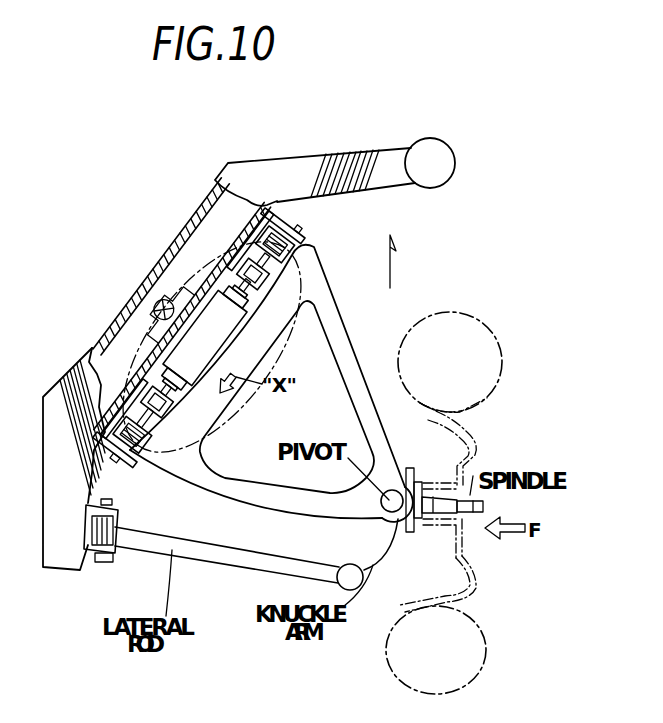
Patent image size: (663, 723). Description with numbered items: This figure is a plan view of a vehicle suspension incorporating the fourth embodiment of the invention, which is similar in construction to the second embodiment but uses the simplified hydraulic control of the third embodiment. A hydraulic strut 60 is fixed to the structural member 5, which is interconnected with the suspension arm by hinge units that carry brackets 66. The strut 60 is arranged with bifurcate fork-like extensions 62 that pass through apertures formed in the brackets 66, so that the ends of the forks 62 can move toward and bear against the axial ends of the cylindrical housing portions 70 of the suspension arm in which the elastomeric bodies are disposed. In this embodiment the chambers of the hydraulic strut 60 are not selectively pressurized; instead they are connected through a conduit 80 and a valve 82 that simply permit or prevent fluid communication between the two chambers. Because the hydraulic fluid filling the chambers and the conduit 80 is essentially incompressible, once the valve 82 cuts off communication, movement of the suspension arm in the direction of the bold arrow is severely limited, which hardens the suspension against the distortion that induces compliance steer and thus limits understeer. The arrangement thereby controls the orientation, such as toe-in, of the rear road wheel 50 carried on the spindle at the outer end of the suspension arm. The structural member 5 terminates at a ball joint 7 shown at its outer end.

The structural member 5 is at (326, 160).
The ball joint 7 is at (431, 140).
The rear road wheel 50 is at (483, 330).
The strut 60 is at (183, 275).
The bifurcate fork-like extension 62 is at (282, 292).
The bracket 66 is at (273, 226).
The cylindrical housing portion 70 is at (296, 254).
The conduit 80 is at (176, 300).
The valve 82 is at (158, 313).